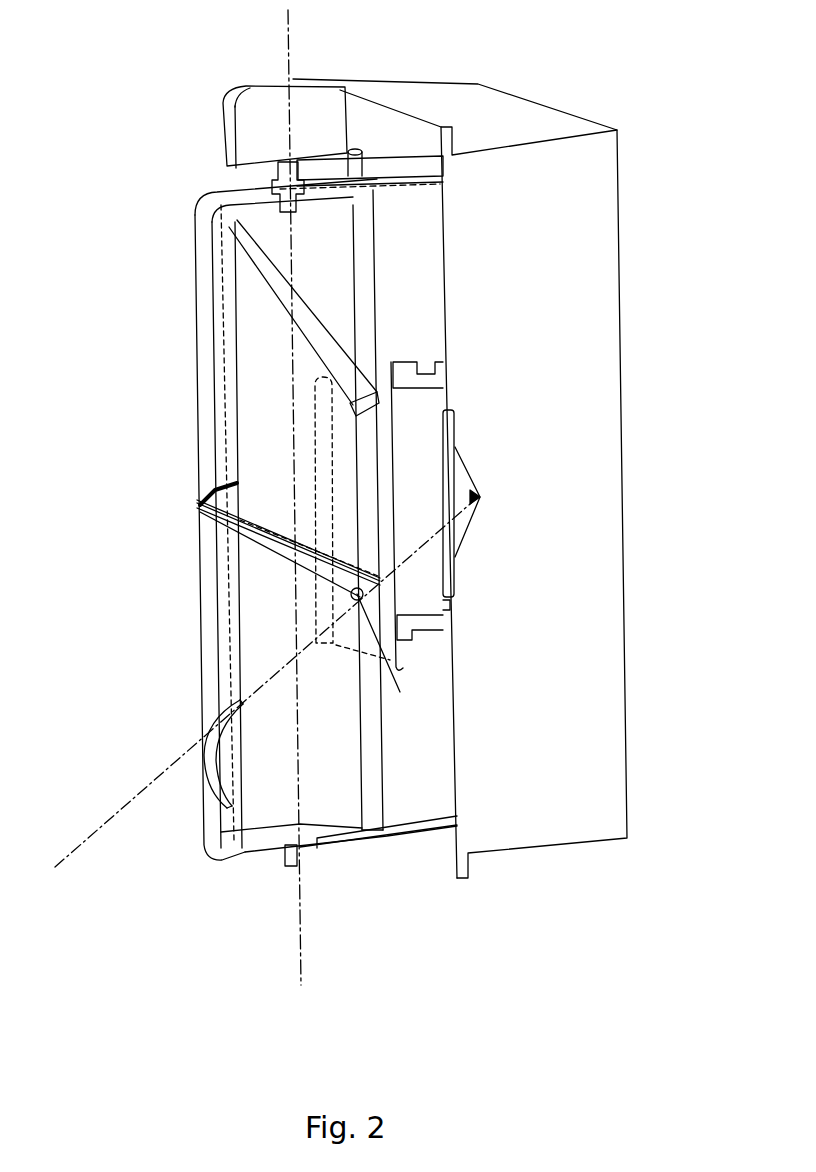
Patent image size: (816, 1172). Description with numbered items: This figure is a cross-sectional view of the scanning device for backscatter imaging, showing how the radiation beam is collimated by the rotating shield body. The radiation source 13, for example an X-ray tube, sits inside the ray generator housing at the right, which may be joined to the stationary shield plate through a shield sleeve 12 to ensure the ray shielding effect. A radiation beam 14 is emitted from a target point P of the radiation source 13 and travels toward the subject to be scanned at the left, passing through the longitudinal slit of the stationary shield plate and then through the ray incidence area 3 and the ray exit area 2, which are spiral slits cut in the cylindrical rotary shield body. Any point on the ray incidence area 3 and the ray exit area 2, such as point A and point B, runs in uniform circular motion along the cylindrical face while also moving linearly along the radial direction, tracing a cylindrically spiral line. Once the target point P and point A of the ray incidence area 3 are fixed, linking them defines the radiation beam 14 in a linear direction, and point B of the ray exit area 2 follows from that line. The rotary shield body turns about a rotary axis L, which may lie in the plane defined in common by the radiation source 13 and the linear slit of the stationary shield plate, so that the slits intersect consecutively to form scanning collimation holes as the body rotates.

The ray exit area 2 is at (285, 311).
The ray incidence area 3 is at (279, 538).
The shield sleeve 12 is at (426, 401).
The radiation source 13 is at (489, 599).
The radiation beam 14 is at (124, 799).
The point A is at (389, 652).
The point B is at (237, 710).
The target point P is at (487, 500).
The rotary axis L is at (301, 494).